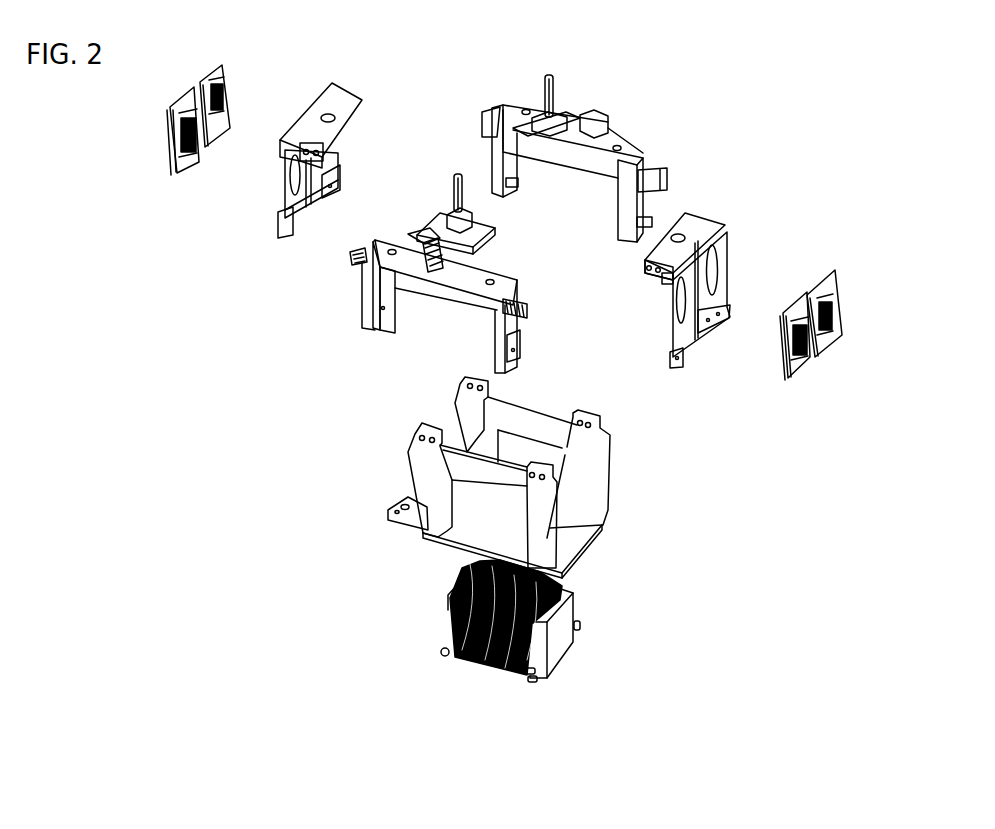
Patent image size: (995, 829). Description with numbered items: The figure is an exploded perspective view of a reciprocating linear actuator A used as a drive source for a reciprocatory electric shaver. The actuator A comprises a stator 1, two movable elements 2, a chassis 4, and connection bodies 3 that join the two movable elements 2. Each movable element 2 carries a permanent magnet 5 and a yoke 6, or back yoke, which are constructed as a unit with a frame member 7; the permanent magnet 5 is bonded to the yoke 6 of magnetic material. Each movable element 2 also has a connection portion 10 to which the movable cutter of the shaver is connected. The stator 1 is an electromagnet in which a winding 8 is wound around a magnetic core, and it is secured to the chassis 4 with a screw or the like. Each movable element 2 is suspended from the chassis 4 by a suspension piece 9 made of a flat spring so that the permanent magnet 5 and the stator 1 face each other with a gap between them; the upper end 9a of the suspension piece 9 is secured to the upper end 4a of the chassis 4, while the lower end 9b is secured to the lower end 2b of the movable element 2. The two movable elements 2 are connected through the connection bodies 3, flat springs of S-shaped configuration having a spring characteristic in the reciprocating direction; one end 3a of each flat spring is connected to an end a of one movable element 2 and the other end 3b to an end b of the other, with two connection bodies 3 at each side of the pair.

The stator 1 is at (558, 642).
The movable element 2 is at (358, 278).
The lower end of the movable element 2b is at (365, 322).
The connection body 3 is at (210, 66).
The one end of the flat spring 3a is at (222, 92).
The other end of the flat spring 3b is at (180, 135).
The chassis 4 is at (592, 441).
The upper end of the chassis 4a is at (435, 425).
The permanent magnet 5 is at (447, 305).
The yoke 6 is at (422, 282).
The frame member 7 is at (503, 110).
The winding 8 is at (470, 660).
The suspension piece 9 is at (288, 210).
The upper end of the suspension piece 9a is at (727, 193).
The lower end of the suspension piece 9b is at (504, 283).
The connection portion 10 is at (452, 178).
The end of one movable element a is at (490, 122).
The end of the other movable element b is at (348, 266).
The reciprocating linear actuator A is at (305, 495).